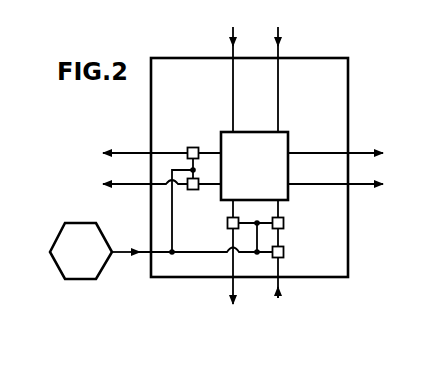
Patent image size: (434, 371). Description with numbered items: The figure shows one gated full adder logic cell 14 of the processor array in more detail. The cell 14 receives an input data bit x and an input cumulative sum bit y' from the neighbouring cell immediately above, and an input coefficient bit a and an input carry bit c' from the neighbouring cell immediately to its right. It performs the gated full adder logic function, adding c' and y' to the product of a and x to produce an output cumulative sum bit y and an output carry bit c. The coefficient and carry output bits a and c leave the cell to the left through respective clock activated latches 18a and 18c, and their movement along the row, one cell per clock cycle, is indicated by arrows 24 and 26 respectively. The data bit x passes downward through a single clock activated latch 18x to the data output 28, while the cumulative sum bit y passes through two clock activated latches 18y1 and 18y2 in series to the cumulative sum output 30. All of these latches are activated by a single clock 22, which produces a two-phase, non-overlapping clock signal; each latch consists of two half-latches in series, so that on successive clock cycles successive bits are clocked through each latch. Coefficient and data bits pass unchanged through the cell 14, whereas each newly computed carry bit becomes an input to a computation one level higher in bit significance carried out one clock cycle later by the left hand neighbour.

The logic cell 14 is at (327, 58).
The clock activated latch 18a is at (193, 147).
The clock activated latch 18c is at (193, 190).
The clock activated latch 18x is at (228, 226).
The clock activated latch 18y1 is at (284, 223).
The clock activated latch 18y2 is at (284, 252).
The clock 22 is at (63, 224).
The arrow 24 is at (107, 148).
The arrow 26 is at (106, 189).
The data output 28 is at (229, 43).
The cumulative sum output 30 is at (284, 42).